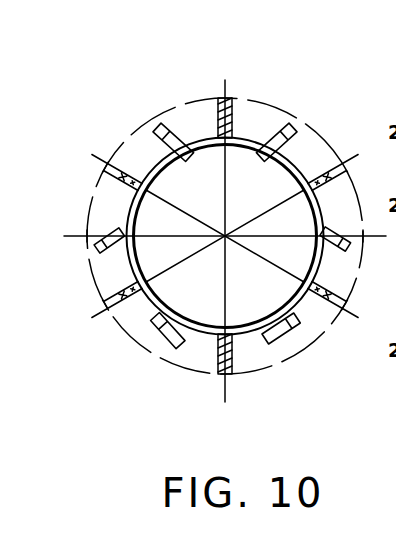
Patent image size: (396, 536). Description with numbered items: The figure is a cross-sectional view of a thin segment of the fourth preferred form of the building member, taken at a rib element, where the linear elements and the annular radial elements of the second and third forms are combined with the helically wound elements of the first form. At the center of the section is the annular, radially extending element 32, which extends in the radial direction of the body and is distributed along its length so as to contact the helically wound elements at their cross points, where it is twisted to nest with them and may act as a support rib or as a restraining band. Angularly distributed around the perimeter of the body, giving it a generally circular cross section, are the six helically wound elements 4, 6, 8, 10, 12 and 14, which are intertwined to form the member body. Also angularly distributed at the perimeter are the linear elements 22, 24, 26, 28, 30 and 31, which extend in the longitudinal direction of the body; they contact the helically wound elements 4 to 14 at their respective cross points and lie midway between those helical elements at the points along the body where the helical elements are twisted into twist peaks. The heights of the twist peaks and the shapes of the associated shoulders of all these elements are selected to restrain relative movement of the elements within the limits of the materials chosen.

The annular radial element 32 is at (283, 167).
The helically wound element 6 is at (228, 118).
The helically wound element 12 is at (223, 353).
The helically wound element 4 is at (128, 176).
The helically wound element 8 is at (314, 177).
The helically wound element 10 is at (312, 295).
The helically wound element 14 is at (112, 292).
The linear element 22 is at (280, 128).
The linear element 24 is at (356, 238).
The linear element 26 is at (285, 333).
The linear element 28 is at (155, 335).
The linear element 30 is at (115, 230).
The linear element 31 is at (170, 132).